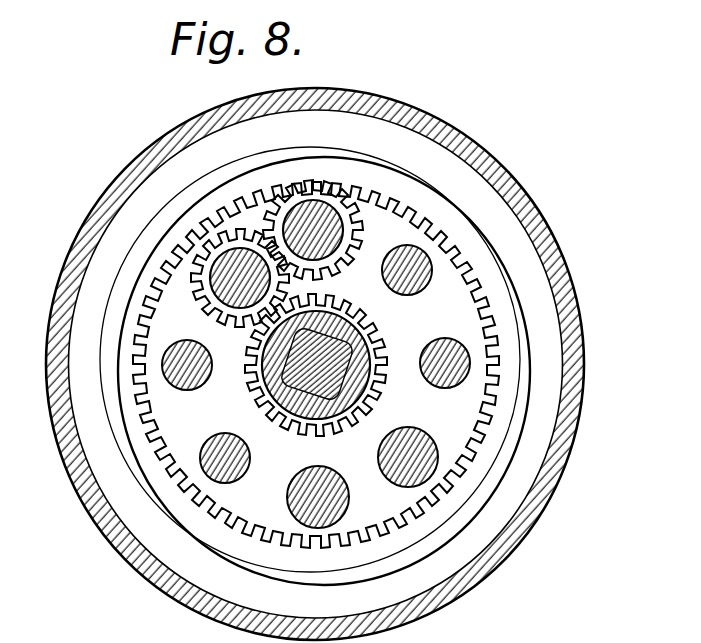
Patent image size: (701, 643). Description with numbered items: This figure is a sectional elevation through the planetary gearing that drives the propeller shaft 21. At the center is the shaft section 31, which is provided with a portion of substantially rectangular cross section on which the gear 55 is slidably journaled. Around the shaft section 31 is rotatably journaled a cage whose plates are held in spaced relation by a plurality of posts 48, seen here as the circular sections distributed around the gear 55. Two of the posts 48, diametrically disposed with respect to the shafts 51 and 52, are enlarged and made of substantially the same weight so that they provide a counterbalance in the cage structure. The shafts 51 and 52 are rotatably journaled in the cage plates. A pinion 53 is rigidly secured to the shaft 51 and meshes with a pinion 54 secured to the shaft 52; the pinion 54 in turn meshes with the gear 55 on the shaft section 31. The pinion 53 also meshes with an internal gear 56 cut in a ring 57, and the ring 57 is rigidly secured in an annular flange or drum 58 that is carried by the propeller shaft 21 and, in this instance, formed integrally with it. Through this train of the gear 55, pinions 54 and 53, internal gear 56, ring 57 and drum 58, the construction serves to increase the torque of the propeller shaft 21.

The propeller shaft 21 is at (558, 253).
The shaft section 31 is at (333, 357).
The posts 48 is at (202, 380).
The shaft 51 is at (308, 213).
The shaft 52 is at (237, 292).
The pinion 53 is at (360, 222).
The pinion 54 is at (205, 292).
The gear 55 is at (332, 301).
The internal gear 56 is at (392, 191).
The ring 57 is at (517, 227).
The annular flange or drum 58 is at (473, 188).